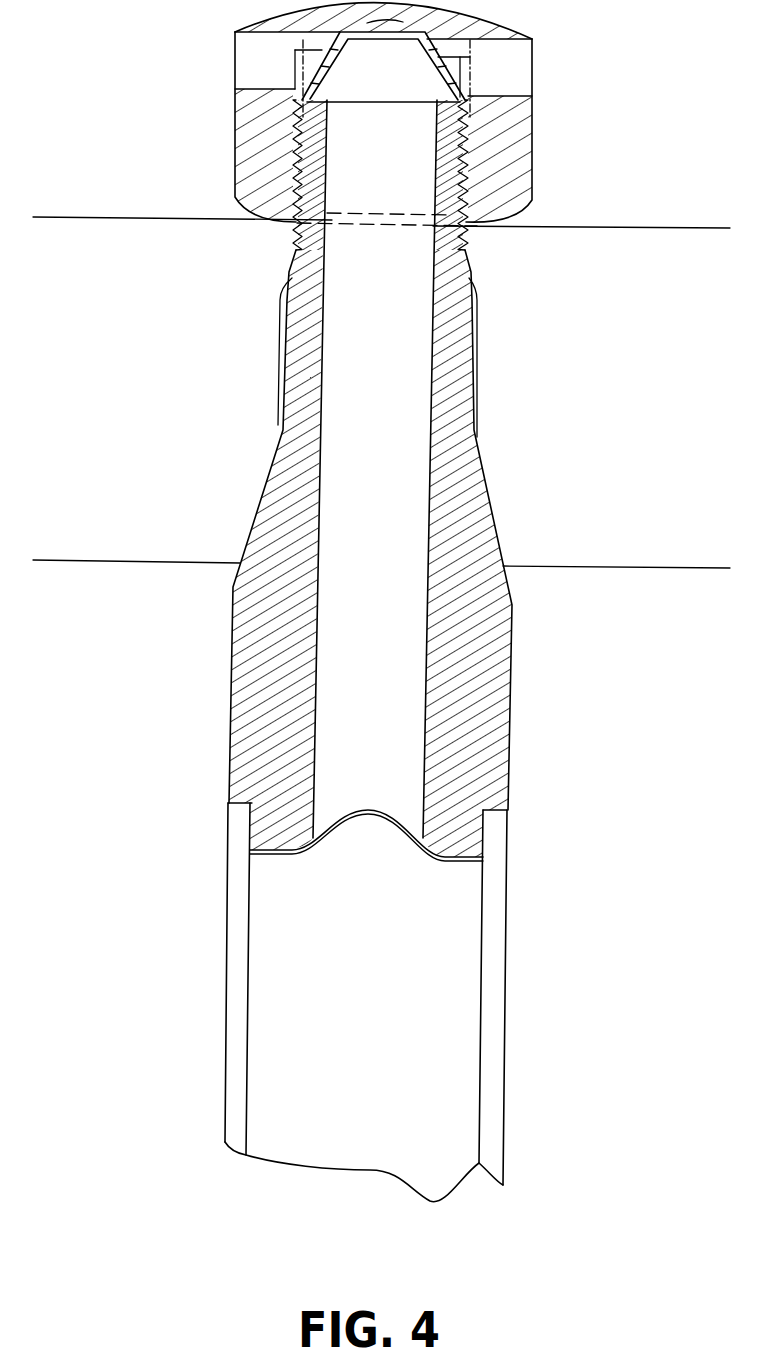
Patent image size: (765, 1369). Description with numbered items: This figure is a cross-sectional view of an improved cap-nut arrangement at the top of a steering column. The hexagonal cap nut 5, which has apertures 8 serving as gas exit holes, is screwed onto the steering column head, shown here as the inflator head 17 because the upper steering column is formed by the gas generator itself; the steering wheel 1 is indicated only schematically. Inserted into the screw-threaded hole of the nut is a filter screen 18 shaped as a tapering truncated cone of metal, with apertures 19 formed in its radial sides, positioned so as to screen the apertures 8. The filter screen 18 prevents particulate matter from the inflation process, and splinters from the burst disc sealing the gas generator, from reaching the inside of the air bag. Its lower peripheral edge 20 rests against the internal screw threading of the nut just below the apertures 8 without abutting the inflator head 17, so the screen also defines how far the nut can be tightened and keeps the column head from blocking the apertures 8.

The steering wheel 1 is at (165, 248).
The hexagonal cap nut 5 is at (535, 152).
The apertures 8 is at (520, 65).
The inflator head 17 is at (512, 632).
The filter screen 18 is at (445, 45).
The apertures 19 is at (458, 78).
The lower peripheral edge 20 is at (472, 107).